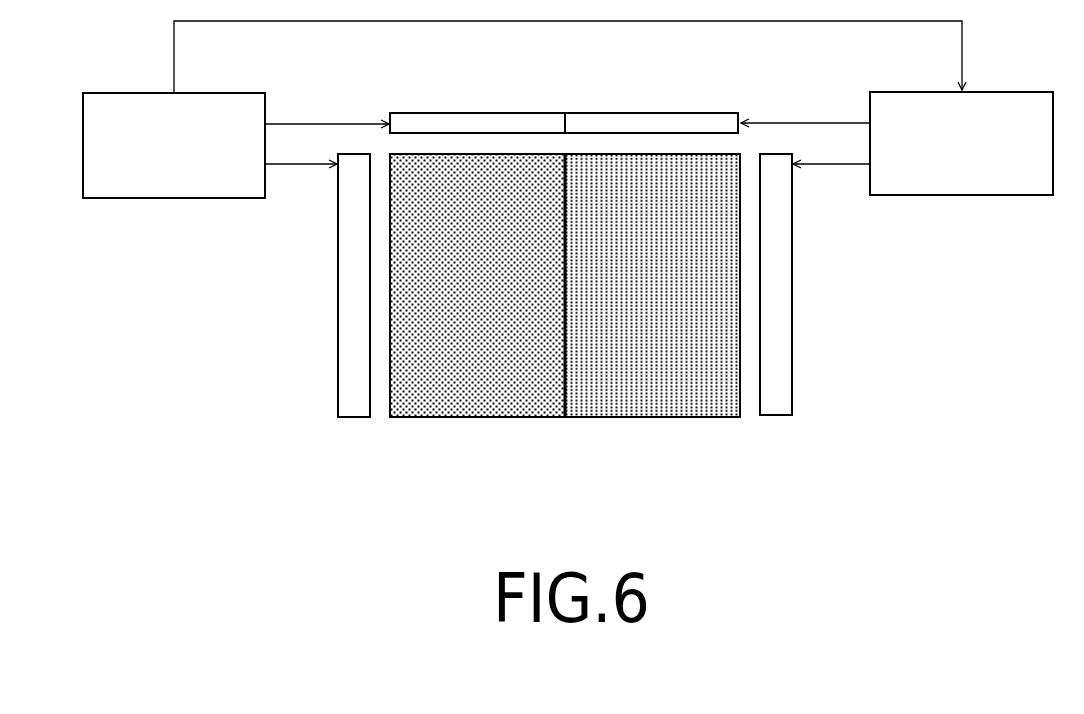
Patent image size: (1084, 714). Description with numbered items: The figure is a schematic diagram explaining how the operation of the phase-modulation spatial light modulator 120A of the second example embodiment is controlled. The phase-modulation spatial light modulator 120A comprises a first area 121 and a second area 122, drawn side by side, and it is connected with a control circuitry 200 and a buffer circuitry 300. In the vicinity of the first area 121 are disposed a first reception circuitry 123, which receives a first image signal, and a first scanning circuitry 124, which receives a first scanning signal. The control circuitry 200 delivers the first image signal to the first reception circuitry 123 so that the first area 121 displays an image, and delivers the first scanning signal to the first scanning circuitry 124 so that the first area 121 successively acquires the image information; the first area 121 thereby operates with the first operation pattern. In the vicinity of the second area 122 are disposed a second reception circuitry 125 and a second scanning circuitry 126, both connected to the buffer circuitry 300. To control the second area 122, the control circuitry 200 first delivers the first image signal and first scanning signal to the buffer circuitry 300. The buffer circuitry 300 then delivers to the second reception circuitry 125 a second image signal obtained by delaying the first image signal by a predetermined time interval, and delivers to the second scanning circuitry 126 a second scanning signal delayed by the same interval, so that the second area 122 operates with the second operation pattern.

The control circuitry 200 is at (97, 93).
The buffer circuitry 300 is at (879, 92).
The first reception circuitry 123 is at (408, 113).
The second reception circuitry 125 is at (583, 113).
The first scanning circuitry 124 is at (338, 318).
The second scanning circuitry 126 is at (792, 320).
The first area 121 is at (491, 372).
The second area 122 is at (661, 372).
The phase-modulation spatial light modulator 120A is at (578, 318).